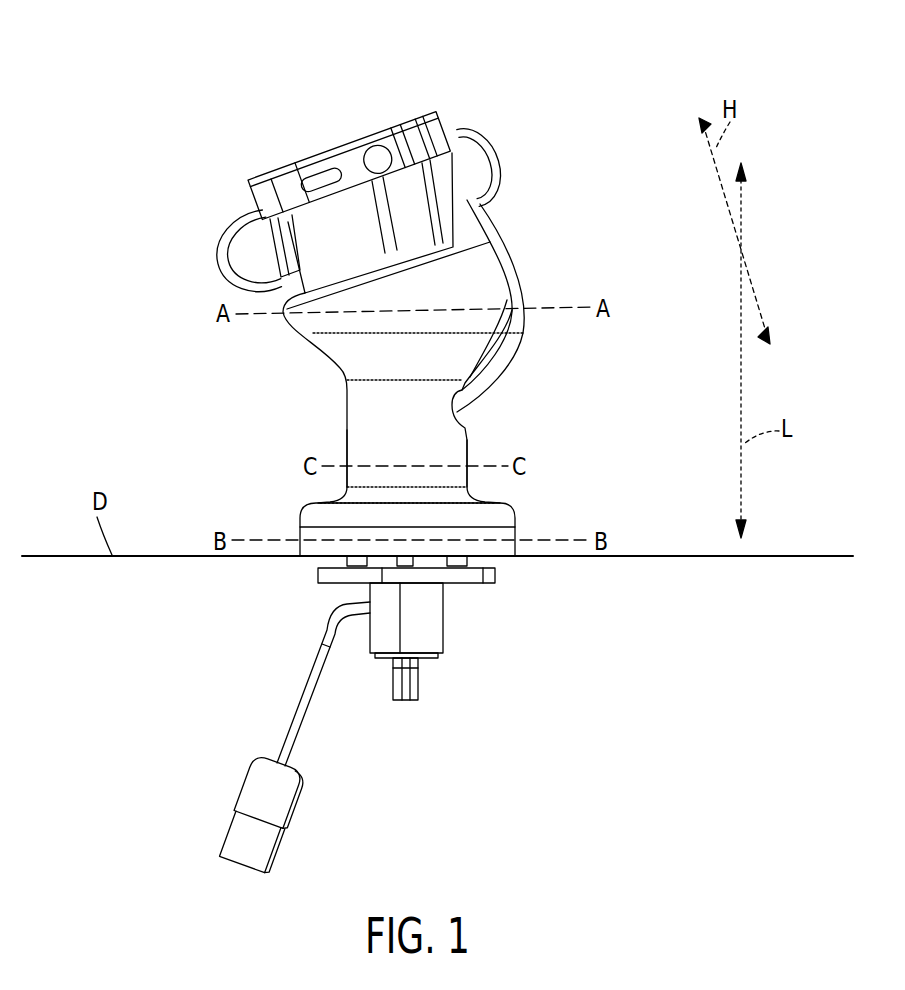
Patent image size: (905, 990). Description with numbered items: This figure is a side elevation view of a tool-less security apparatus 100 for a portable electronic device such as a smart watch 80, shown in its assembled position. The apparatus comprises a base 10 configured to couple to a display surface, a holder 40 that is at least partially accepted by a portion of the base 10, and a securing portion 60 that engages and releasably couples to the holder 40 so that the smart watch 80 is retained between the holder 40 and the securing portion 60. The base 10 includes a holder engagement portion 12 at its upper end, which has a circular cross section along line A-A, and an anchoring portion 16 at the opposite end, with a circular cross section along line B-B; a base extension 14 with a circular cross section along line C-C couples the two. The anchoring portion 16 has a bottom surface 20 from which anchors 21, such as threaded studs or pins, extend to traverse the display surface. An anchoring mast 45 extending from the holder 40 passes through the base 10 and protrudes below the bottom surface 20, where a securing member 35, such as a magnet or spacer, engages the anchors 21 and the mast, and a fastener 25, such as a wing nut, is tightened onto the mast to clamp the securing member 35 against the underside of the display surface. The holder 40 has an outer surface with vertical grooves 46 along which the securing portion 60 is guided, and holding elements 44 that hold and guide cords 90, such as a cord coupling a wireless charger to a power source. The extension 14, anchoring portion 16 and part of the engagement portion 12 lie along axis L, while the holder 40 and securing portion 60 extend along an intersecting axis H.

The tool-less security apparatus 100 is at (126, 82).
The base 10 is at (318, 434).
The holder engagement portion 12 is at (480, 291).
The base extension 14 is at (448, 455).
The anchoring portion 16 is at (515, 525).
The bottom surface 20 is at (518, 550).
The anchors 21 is at (340, 570).
The fastener 25 is at (420, 696).
The securing member 35 is at (492, 574).
The anchoring mast 45 is at (442, 570).
The holder 40 is at (338, 242).
The holding elements 44 is at (310, 257).
The vertical grooves 46 is at (298, 264).
The securing portion 60 is at (445, 140).
The smart watch 80 is at (316, 150).
The cords 90 is at (505, 243).